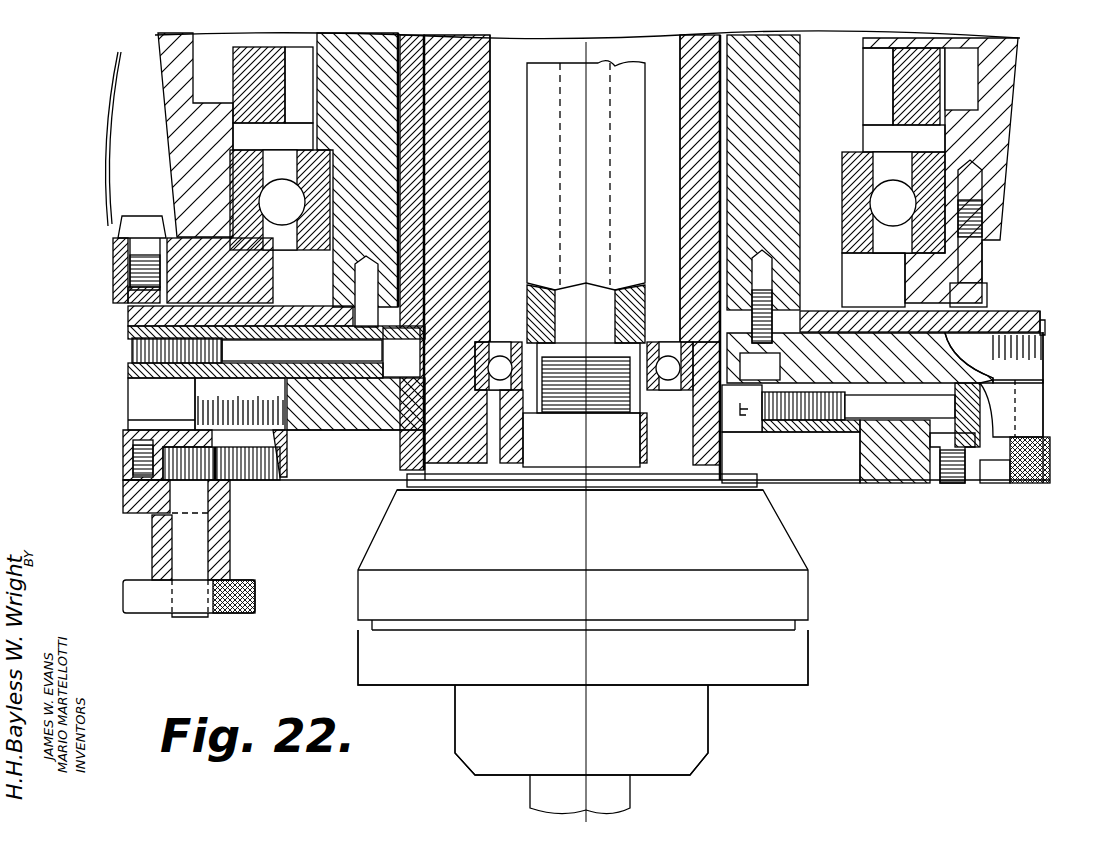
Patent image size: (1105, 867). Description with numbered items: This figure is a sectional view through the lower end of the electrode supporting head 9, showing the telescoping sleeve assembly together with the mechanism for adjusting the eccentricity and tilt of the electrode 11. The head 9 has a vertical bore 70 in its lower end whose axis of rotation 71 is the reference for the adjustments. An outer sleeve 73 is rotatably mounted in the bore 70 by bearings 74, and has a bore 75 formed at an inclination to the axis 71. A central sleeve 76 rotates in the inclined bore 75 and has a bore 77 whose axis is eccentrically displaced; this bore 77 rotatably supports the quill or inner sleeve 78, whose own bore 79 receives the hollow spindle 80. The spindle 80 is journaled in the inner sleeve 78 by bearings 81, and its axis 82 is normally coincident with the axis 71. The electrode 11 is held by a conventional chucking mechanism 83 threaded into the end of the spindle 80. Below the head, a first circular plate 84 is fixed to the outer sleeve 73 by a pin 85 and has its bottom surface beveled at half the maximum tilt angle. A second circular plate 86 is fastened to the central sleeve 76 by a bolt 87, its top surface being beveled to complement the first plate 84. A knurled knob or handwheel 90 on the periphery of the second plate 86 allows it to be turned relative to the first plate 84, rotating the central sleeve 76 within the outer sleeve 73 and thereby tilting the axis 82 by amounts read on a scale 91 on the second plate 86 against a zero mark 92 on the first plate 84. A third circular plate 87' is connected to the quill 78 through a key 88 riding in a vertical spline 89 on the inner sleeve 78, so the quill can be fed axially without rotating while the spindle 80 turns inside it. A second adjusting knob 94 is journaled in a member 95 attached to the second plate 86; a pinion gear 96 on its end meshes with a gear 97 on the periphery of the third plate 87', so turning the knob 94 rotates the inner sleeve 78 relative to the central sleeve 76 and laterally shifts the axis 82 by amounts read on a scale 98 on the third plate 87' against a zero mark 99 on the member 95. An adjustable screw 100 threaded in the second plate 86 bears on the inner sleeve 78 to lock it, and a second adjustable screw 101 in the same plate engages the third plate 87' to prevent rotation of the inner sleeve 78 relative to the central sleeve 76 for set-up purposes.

The electrode supporting head 9 is at (1010, 80).
The electrode 11 is at (530, 797).
The vertical bore 70 is at (230, 135).
The axis of rotation 71 is at (586, 530).
The outer sleeve 73 is at (287, 90).
The bearings 74 is at (262, 202).
The bore 75 is at (445, 52).
The central sleeve 76 is at (427, 152).
The bore 77 is at (435, 97).
The quill or inner sleeve 78 is at (480, 122).
The bore 79 is at (490, 193).
The spindle 80 is at (527, 242).
The bearings 81 is at (497, 342).
The axis 82 is at (583, 702).
The chucking mechanism 83 is at (797, 567).
The first circular plate 84 is at (128, 315).
The pin 85 is at (356, 278).
The second circular plate 86 is at (130, 332).
The bolt 87 is at (820, 308).
The third circular plate 87' is at (601, 455).
The key 88 is at (753, 420).
The spline 89 is at (745, 232).
The knurled knob or handwheel 90 is at (1052, 465).
The scale 91 is at (1044, 347).
The zero mark 92 is at (1046, 327).
The second adjusting knob 94 is at (228, 613).
The member 95 is at (122, 490).
The pinion gear 96 is at (222, 490).
The gear 97 is at (263, 481).
The scale 98 is at (193, 378).
The zero mark 99 is at (193, 413).
The adjustable screw 100 is at (130, 343).
The second adjustable screw 101 is at (957, 470).